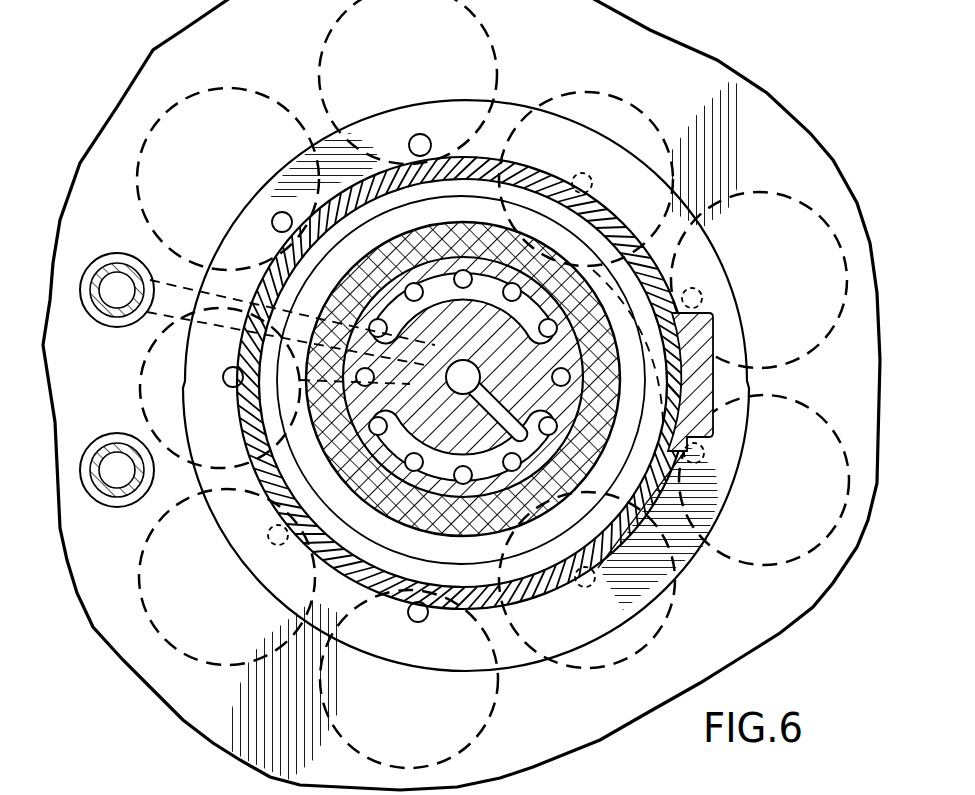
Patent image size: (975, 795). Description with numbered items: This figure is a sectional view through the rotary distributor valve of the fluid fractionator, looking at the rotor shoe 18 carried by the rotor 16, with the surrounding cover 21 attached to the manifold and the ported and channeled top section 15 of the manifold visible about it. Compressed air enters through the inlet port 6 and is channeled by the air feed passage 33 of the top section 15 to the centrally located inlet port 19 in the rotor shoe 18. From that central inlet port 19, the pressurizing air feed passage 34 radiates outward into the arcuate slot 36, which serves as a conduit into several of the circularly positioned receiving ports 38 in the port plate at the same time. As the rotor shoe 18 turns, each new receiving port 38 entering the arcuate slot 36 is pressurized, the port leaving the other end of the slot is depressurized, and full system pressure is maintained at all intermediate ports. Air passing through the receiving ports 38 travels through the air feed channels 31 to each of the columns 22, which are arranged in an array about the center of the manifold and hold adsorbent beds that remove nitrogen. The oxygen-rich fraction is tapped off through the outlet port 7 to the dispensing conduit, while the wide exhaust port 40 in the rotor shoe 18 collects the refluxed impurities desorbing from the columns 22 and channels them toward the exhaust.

The inlet port 6 is at (113, 254).
The outlet port 7 is at (108, 506).
The top section 15 is at (748, 623).
The rotor 16 is at (273, 492).
The rotor shoe 18 is at (242, 422).
The inlet port 19 is at (462, 364).
The cover 21 is at (611, 210).
The column 22 is at (237, 90).
The air feed channels 31 is at (672, 262).
The air feed passage 33 is at (206, 327).
The air feed passage 34 is at (483, 417).
The arcuate slot 36 is at (507, 520).
The receiving ports 38 is at (414, 283).
The exhaust port 40 is at (490, 265).